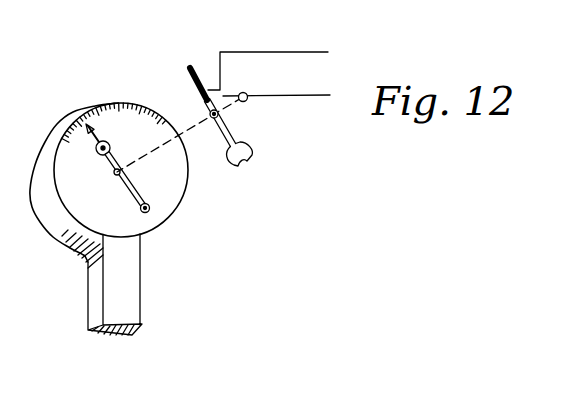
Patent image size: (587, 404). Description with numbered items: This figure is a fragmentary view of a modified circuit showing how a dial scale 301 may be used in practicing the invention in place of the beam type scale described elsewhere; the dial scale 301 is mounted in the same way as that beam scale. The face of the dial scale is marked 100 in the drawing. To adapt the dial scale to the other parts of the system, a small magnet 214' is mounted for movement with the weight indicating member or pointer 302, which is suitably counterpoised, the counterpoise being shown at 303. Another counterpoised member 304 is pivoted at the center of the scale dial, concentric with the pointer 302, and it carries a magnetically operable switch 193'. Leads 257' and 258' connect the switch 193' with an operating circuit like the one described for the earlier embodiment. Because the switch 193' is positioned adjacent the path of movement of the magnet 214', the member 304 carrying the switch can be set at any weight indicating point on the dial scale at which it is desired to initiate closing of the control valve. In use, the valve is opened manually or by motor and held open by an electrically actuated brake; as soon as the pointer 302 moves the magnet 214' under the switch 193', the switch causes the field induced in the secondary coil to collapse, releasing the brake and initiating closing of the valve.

The pressure gauge 100 is at (109, 179).
The dial scale 301 is at (150, 283).
The small magnet 214' is at (121, 111).
The pointer 302 is at (113, 169).
The counterpoise 303 is at (150, 205).
The counterpoised member 304 is at (221, 103).
The magnetically operable switch 193' is at (208, 56).
The lead 258' is at (268, 53).
The lead 257' is at (223, 133).